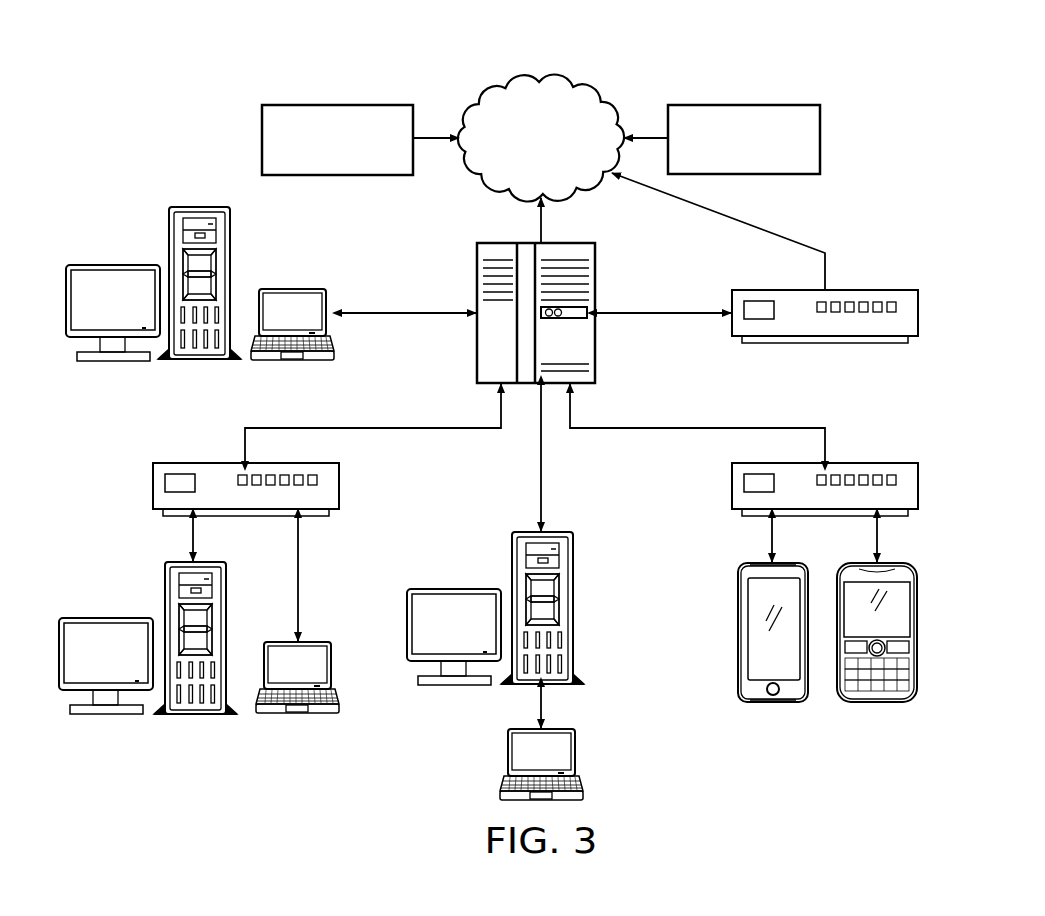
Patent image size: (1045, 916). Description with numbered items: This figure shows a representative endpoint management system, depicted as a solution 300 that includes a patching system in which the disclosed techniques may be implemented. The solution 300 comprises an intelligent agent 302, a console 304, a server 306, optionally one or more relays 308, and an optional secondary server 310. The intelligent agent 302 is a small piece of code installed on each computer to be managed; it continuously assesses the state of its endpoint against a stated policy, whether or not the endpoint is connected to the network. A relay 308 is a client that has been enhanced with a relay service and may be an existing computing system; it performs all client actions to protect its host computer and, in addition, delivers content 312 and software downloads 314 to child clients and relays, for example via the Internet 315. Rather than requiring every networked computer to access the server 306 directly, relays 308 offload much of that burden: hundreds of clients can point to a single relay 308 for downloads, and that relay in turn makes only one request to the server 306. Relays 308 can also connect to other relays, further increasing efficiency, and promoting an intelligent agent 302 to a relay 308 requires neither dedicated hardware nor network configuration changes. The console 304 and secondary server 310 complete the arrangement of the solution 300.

The solution 300 is at (204, 67).
The intelligent agent 302 is at (181, 735).
The console 304 is at (141, 205).
The server 306 is at (477, 278).
The relay 308 is at (464, 559).
The secondary server 310 is at (865, 288).
The content 312 is at (345, 104).
The software downloads 314 is at (744, 104).
The Internet 315 is at (575, 85).